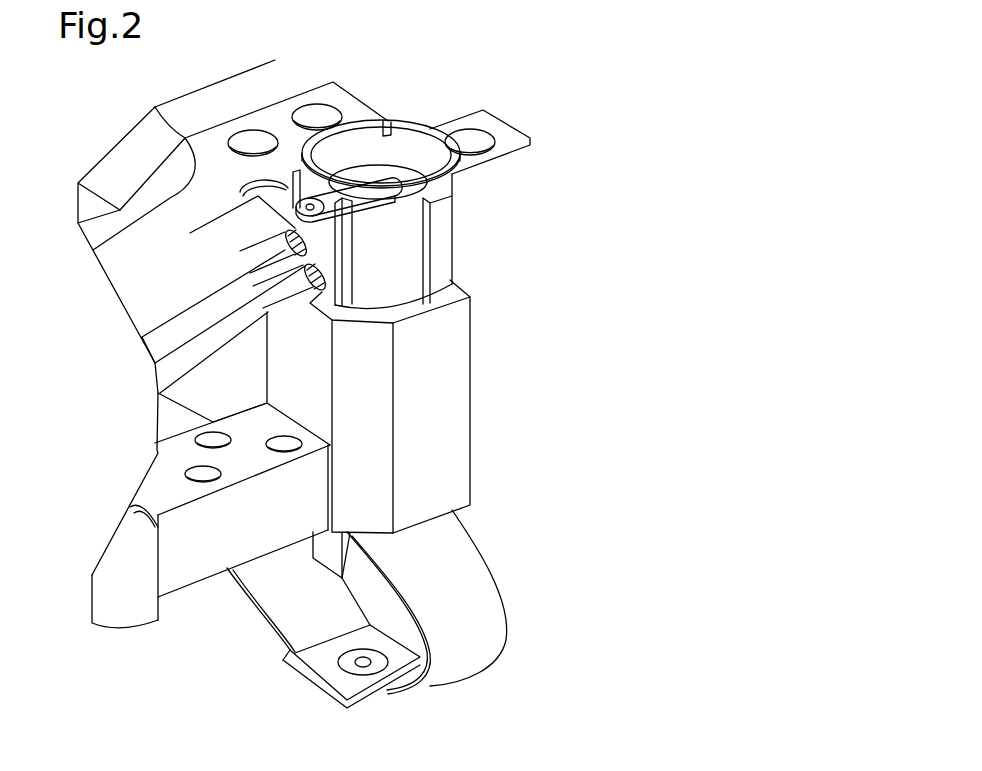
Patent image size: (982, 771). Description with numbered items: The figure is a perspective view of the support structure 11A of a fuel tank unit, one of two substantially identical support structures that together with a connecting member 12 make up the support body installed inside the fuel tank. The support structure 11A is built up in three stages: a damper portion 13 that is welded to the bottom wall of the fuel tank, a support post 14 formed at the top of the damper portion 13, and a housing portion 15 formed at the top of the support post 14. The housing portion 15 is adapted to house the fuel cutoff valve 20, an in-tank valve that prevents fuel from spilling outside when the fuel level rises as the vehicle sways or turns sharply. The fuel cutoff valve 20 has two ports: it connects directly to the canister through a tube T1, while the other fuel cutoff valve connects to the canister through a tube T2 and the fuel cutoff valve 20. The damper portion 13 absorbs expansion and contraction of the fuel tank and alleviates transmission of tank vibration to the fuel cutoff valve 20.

The connecting member 12 is at (230, 543).
The tube T1 is at (175, 333).
The tube T2 is at (173, 373).
The support structure 11A is at (662, 188).
The housing portion 15 is at (447, 222).
The fuel cutoff valve 20 is at (383, 167).
The support post 14 is at (468, 405).
The damper portion 13 is at (485, 565).